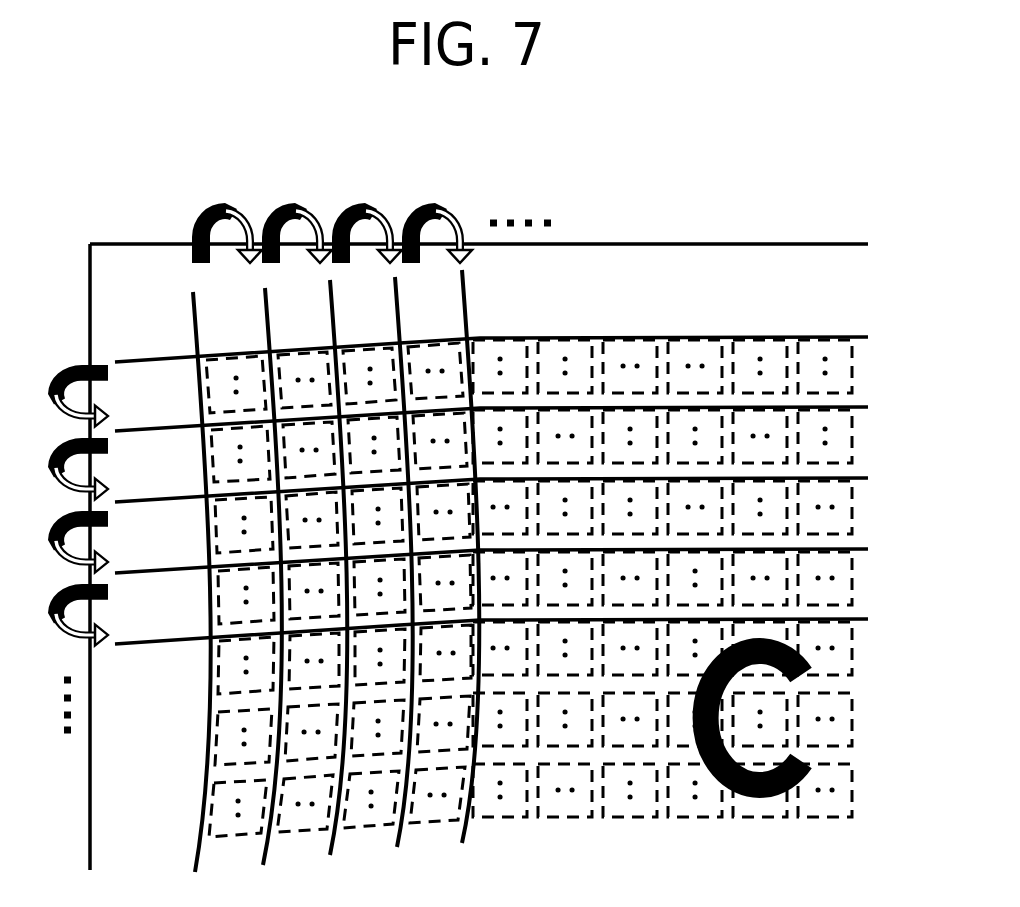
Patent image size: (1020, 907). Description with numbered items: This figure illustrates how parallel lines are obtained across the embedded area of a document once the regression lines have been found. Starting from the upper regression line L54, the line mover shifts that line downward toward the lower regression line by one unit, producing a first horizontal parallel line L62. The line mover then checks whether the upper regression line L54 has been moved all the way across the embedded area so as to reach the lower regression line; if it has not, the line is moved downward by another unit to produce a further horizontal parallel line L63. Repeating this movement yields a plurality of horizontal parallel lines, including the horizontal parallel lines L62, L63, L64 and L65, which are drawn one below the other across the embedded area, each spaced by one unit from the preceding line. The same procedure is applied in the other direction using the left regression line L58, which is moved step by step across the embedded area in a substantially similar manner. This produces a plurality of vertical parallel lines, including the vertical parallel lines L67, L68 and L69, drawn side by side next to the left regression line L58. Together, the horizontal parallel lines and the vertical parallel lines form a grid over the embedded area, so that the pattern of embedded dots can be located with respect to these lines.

The upper regression line L54 is at (521, 343).
The horizontal parallel line L62 is at (521, 413).
The horizontal parallel line L63 is at (521, 484).
The horizontal parallel line L64 is at (521, 555).
The horizontal parallel line L65 is at (521, 625).
The left regression line L58 is at (191, 599).
The vertical parallel line L67 is at (261, 593).
The vertical parallel line L68 is at (327, 587).
The vertical parallel line L69 is at (394, 582).